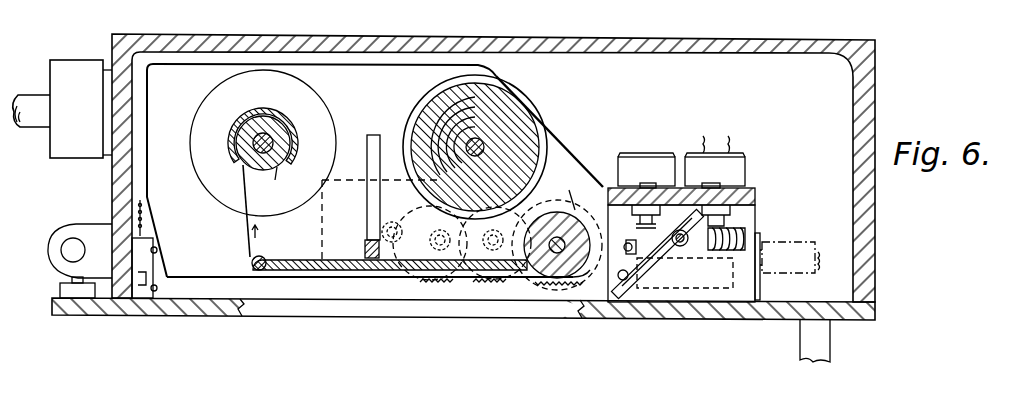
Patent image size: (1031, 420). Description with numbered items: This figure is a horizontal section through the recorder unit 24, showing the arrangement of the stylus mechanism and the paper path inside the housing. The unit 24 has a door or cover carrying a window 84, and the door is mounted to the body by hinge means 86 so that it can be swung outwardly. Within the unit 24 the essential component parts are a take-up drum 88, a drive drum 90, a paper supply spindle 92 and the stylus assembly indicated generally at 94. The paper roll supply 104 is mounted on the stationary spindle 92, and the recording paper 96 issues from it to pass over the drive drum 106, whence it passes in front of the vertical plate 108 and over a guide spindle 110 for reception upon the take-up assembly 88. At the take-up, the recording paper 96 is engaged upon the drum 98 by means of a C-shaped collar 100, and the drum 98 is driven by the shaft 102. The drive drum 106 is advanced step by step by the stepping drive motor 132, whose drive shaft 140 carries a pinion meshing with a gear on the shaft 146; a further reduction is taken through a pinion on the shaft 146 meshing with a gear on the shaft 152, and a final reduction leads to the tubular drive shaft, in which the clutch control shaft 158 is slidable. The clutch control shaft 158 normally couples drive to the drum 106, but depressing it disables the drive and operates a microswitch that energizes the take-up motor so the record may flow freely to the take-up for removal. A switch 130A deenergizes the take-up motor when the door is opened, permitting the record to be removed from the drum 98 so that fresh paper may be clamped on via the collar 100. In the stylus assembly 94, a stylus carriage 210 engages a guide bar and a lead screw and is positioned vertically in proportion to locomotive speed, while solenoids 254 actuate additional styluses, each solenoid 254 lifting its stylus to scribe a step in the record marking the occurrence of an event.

The unit 24 is at (886, 101).
The window 84 is at (337, 312).
The hinge means 86 is at (64, 262).
The take-up drum 88 is at (323, 91).
The drive drum 90 is at (563, 195).
The paper supply spindle 92 is at (487, 143).
The stylus assembly 94 is at (760, 183).
The recording paper 96 is at (242, 200).
The drum 98 is at (268, 125).
The C-shaped collar 100 is at (252, 116).
The shaft 102 is at (292, 133).
The paper roll supply 104 is at (545, 131).
The drive drum 106 is at (572, 195).
The plate 108 is at (347, 259).
The guide spindle 110 is at (265, 256).
The switch 130A is at (143, 273).
The drive motor 132 is at (308, 262).
The drive shaft 140 is at (388, 283).
The shaft 146 is at (458, 290).
The shaft 152 is at (497, 290).
The clutch control shaft 158 is at (548, 283).
The stylus carriage 210 is at (660, 266).
The solenoid 254 is at (779, 248).